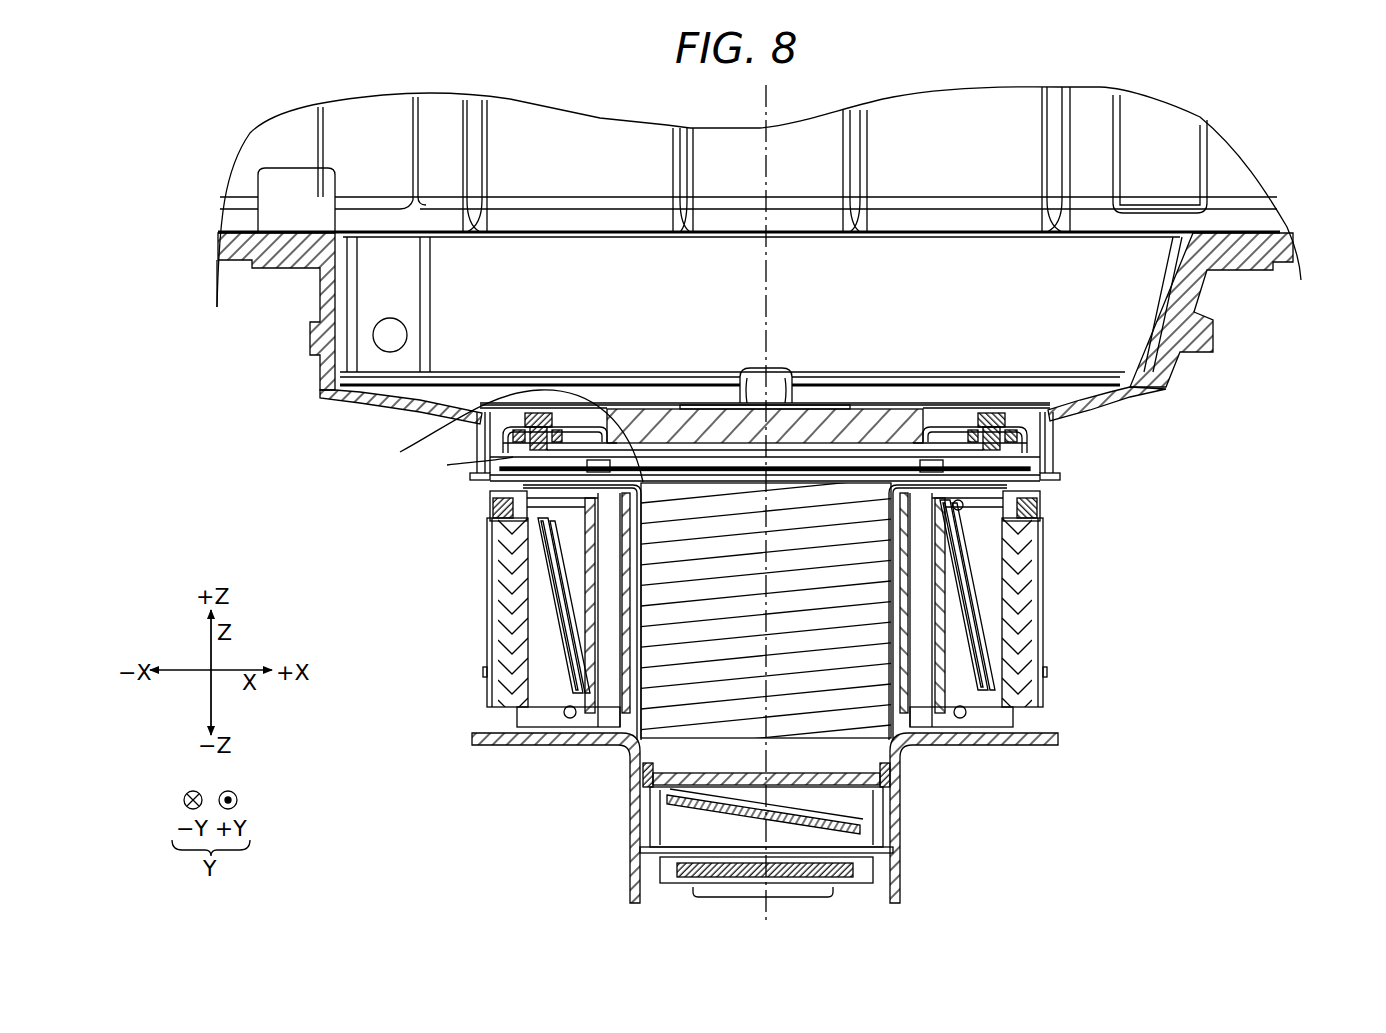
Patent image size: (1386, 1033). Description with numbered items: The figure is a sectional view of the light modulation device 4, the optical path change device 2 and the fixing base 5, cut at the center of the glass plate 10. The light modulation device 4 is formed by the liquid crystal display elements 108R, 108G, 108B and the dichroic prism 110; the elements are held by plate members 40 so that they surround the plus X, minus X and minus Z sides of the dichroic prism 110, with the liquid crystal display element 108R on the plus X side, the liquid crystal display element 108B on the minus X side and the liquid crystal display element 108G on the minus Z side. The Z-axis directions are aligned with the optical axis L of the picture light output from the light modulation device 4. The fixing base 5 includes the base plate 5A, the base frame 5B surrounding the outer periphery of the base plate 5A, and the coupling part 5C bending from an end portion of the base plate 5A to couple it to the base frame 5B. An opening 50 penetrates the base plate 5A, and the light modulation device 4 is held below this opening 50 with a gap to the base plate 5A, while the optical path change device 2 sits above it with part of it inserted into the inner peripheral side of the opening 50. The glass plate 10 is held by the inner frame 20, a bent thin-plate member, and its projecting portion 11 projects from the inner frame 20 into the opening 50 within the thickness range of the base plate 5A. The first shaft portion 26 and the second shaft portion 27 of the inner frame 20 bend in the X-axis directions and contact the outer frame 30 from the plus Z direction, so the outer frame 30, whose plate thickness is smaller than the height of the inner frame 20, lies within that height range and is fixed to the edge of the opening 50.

The optical axis L is at (768, 100).
The fixing base 5 is at (787, 255).
The base plate 5A is at (1180, 393).
The base frame 5B is at (1243, 280).
The coupling part 5C is at (1193, 302).
The opening 50 is at (1033, 425).
The outer frame 30 is at (1020, 433).
The inner frame 20 is at (957, 437).
The first shaft portion 26 is at (900, 437).
The projecting portion 11 is at (504, 436).
The second shaft portion 27 is at (466, 467).
The optical path change device 2 is at (578, 450).
The glass plate 10 is at (955, 500).
The dichroic prism 110 is at (700, 680).
The liquid crystal display element 108B is at (478, 688).
The liquid crystal display element 108R is at (1053, 688).
The liquid crystal display element 108G is at (848, 894).
The plate member 40 is at (533, 745).
The light modulation device 4 is at (590, 763).